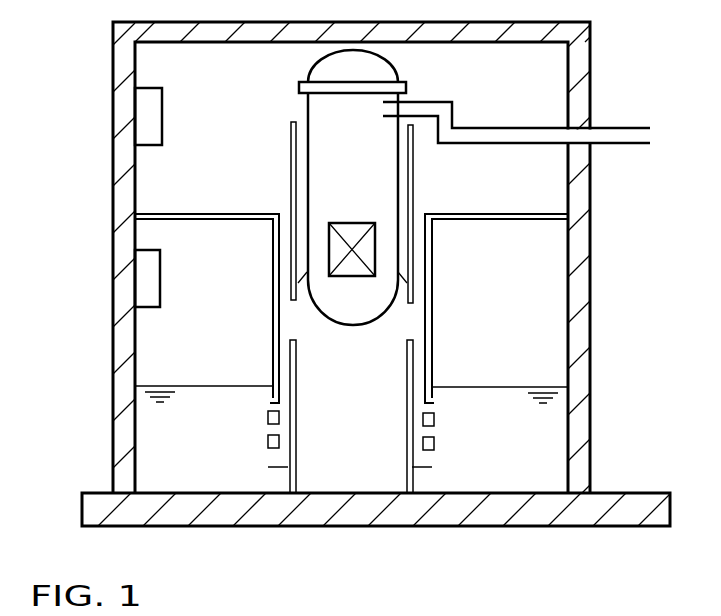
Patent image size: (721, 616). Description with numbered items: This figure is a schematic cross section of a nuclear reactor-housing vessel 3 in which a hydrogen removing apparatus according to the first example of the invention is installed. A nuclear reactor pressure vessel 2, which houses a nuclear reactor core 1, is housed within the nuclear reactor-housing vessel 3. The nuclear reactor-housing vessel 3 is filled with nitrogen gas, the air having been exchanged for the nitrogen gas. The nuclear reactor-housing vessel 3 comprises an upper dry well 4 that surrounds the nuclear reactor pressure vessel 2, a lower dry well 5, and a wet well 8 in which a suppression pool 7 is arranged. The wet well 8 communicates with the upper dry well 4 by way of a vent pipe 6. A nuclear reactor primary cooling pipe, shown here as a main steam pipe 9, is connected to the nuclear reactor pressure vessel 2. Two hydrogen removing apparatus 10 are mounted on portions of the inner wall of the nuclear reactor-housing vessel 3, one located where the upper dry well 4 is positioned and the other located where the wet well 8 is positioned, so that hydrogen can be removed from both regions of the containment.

The nuclear reactor core 1 is at (350, 226).
The nuclear reactor pressure vessel 2 is at (323, 112).
The nuclear reactor-housing vessel 3 is at (595, 50).
The upper dry well 4 is at (150, 58).
The lower dry well 5 is at (358, 528).
The vent pipe 6 is at (285, 252).
The suppression pool 7 is at (502, 407).
The wet well 8 is at (550, 373).
The main steam pipe 9 is at (620, 145).
The hydrogen removing apparatus 10 is at (150, 128).